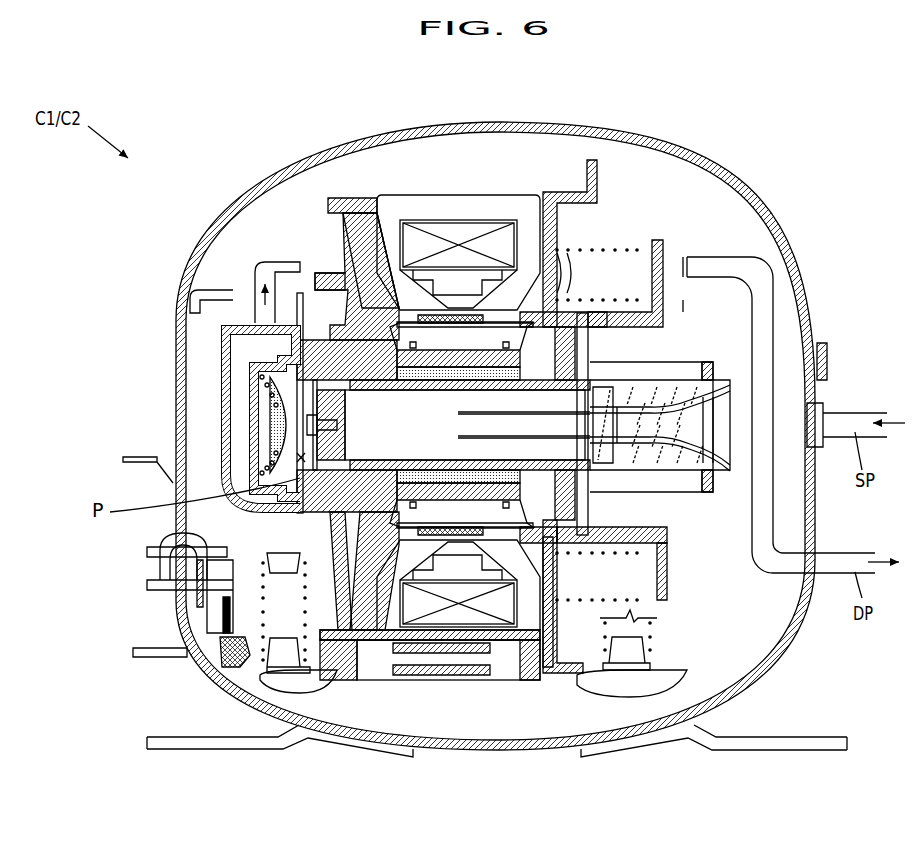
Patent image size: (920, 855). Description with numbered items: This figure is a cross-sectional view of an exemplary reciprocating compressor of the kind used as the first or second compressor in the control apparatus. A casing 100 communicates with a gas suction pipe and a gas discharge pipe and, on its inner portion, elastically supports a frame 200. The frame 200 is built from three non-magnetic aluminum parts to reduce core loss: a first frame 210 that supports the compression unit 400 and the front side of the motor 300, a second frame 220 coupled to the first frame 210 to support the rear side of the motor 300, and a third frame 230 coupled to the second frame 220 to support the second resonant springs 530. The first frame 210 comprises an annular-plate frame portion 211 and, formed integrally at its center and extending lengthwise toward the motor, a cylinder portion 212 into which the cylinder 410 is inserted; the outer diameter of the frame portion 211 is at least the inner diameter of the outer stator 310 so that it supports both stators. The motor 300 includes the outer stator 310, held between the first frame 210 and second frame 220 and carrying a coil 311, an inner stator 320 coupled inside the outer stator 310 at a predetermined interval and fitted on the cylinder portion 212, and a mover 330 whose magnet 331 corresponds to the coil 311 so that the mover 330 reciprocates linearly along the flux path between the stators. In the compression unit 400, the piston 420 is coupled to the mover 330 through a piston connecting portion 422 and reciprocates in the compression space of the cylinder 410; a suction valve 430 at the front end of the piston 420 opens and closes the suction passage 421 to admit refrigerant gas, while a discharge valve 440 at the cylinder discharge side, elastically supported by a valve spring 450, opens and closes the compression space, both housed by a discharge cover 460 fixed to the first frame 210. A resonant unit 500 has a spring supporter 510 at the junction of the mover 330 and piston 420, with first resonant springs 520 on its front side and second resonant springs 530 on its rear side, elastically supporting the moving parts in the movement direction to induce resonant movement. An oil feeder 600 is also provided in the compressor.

The casing 100 is at (767, 217).
The frame 200 is at (264, 239).
The first frame 210 is at (310, 82).
The frame portion 211 is at (345, 336).
The cylinder portion 212 is at (395, 305).
The second frame 220 is at (593, 158).
The third frame 230 is at (717, 368).
The motor 300 is at (462, 340).
The outer stator 310 is at (440, 196).
The coil 311 is at (425, 243).
The inner stator 320 is at (468, 335).
The mover 330 is at (508, 322).
The magnet 331 is at (457, 314).
The compression unit 400 is at (173, 387).
The cylinder 410 is at (300, 312).
The piston 420 is at (315, 395).
The suction passage 421 is at (381, 436).
The piston connecting portion 422 is at (545, 577).
The suction valve 430 is at (295, 410).
The discharge valve 440 is at (265, 405).
The valve spring 450 is at (262, 462).
The discharge cover 460 is at (72, 280).
The resonant unit 500 is at (492, 361).
The spring supporter 510 is at (657, 240).
The first resonant springs 520 is at (622, 248).
The second resonant springs 530 is at (690, 380).
The oil feeder 600 is at (441, 692).